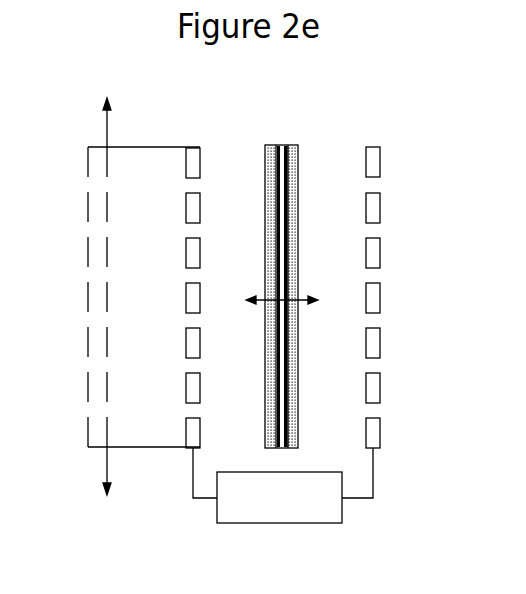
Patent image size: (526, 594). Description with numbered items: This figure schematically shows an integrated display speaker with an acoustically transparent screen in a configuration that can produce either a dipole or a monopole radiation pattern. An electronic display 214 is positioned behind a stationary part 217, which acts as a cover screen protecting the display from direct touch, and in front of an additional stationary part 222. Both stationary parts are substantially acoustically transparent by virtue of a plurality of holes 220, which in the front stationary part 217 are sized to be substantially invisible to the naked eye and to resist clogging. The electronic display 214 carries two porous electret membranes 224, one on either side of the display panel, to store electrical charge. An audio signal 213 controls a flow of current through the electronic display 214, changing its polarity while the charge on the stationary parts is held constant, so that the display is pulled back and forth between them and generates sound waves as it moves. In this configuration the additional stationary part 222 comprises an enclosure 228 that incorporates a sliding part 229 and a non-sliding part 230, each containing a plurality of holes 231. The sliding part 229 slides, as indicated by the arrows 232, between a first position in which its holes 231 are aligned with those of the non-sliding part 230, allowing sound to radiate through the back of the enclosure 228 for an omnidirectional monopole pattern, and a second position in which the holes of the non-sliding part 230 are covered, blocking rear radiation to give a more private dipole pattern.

The audio signal 213 is at (298, 515).
The electronic display 214 is at (280, 367).
The stationary part 217 is at (372, 162).
The holes 220 is at (249, 270).
The additional stationary part 222 is at (193, 157).
The porous electret membranes 224 is at (267, 162).
The enclosure 228 is at (152, 449).
The sliding part 229 is at (107, 303).
The non-sliding part 230 is at (88, 260).
The holes 231 is at (59, 297).
The arrows 232 is at (107, 127).